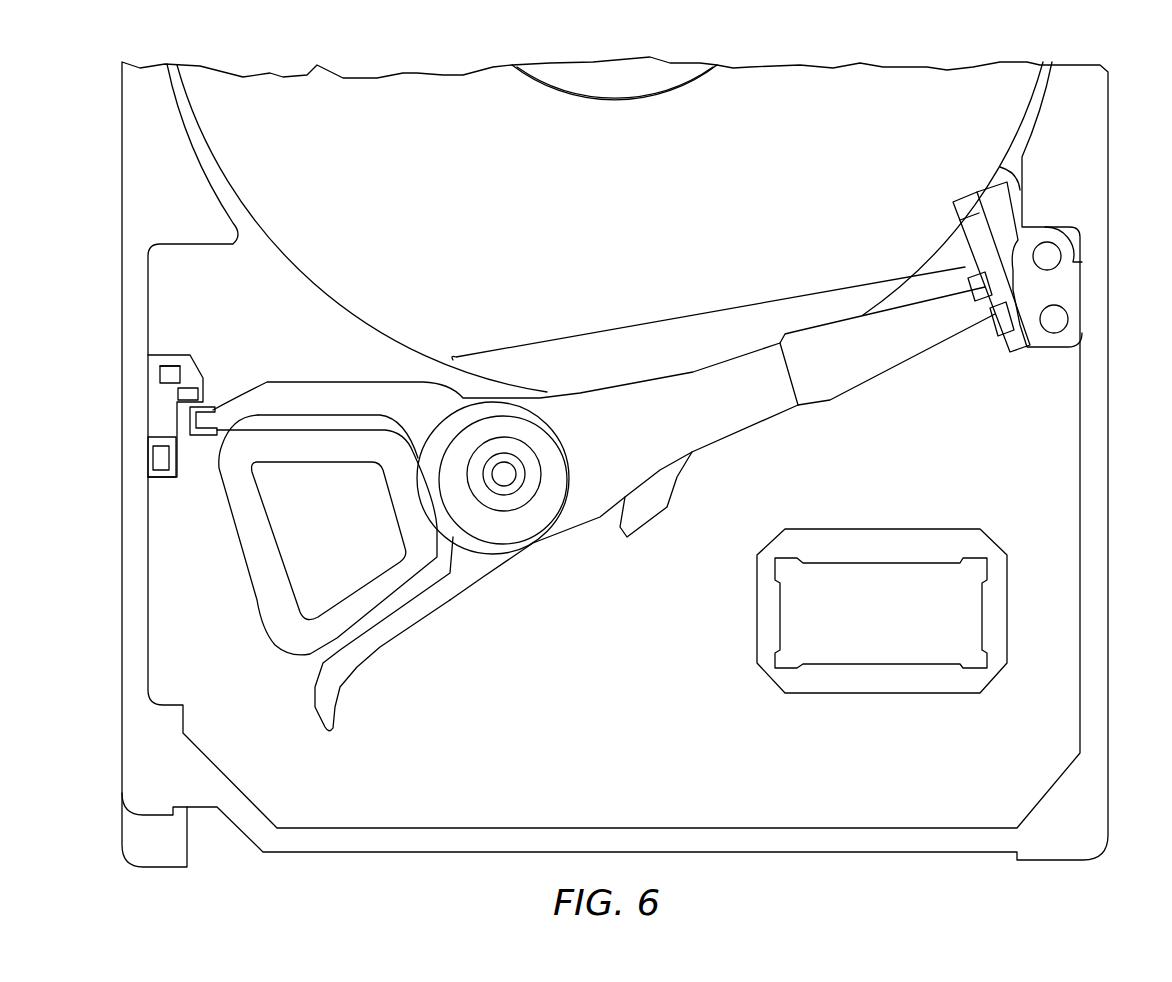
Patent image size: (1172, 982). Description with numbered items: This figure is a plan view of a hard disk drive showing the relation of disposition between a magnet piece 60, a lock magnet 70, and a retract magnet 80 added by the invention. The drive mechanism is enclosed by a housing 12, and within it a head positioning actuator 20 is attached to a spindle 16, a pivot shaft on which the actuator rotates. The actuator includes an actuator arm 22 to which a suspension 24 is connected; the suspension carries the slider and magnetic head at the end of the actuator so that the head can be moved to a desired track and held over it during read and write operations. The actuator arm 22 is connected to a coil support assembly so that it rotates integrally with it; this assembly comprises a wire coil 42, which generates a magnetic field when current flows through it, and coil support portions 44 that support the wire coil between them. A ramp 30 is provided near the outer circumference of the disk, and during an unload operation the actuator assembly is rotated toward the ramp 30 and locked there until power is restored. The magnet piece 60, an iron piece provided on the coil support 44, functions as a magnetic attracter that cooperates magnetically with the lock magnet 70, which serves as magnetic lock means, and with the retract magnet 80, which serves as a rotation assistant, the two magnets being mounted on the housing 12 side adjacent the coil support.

The housing 12 is at (1112, 402).
The spindle 16 is at (505, 473).
The head positioning actuator 20 is at (715, 306).
The actuator arm 22 is at (730, 418).
The suspension 24 is at (893, 355).
The ramp 30 is at (1052, 347).
The wire coil 42 is at (260, 597).
The coil support portions 44 is at (398, 643).
The magnet piece 60 is at (198, 437).
The lock magnet 70 is at (178, 393).
The retract magnet 80 is at (153, 458).